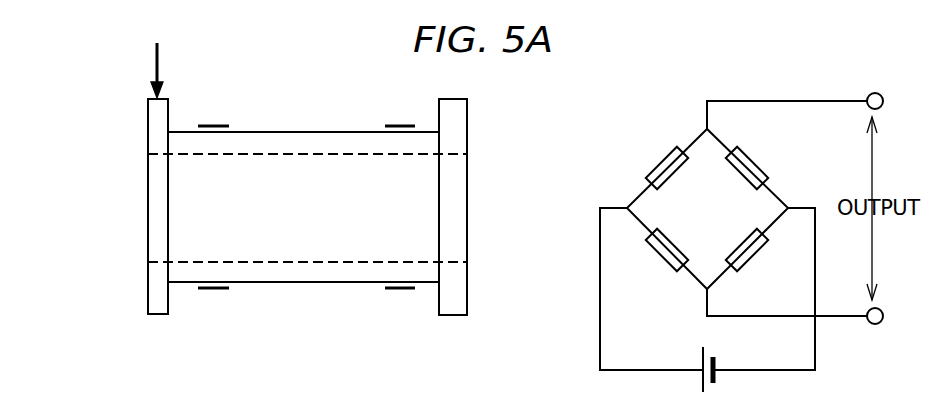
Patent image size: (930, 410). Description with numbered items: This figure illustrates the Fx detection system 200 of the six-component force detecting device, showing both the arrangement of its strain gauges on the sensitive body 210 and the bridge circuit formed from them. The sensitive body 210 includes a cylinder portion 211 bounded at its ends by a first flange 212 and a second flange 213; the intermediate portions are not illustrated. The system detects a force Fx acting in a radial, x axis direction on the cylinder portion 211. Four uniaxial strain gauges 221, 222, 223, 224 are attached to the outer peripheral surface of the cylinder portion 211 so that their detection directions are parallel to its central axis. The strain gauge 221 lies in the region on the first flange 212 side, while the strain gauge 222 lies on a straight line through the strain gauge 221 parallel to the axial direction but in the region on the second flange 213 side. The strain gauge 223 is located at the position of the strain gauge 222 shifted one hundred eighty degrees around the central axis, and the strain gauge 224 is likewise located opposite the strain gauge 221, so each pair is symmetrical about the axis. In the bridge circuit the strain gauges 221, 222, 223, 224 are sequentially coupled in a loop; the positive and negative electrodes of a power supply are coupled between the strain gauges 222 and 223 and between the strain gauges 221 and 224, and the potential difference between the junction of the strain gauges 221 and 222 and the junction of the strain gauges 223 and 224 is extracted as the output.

The force sensor 200 is at (122, 95).
The sensitive body 210 is at (130, 127).
The cylinder portion 211 is at (301, 132).
The first flange 212 is at (147, 191).
The second flange 213 is at (467, 203).
The strain gauge 221 is at (213, 126).
The strain gauge 222 is at (400, 126).
The strain gauge 223 is at (400, 292).
The strain gauge 224 is at (213, 292).